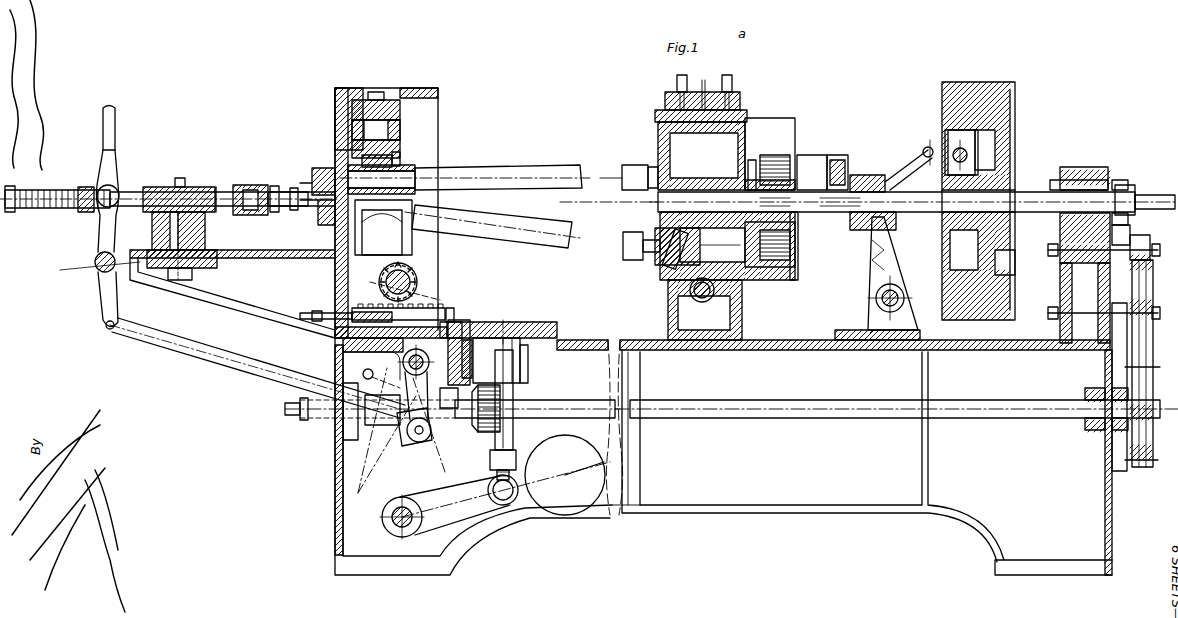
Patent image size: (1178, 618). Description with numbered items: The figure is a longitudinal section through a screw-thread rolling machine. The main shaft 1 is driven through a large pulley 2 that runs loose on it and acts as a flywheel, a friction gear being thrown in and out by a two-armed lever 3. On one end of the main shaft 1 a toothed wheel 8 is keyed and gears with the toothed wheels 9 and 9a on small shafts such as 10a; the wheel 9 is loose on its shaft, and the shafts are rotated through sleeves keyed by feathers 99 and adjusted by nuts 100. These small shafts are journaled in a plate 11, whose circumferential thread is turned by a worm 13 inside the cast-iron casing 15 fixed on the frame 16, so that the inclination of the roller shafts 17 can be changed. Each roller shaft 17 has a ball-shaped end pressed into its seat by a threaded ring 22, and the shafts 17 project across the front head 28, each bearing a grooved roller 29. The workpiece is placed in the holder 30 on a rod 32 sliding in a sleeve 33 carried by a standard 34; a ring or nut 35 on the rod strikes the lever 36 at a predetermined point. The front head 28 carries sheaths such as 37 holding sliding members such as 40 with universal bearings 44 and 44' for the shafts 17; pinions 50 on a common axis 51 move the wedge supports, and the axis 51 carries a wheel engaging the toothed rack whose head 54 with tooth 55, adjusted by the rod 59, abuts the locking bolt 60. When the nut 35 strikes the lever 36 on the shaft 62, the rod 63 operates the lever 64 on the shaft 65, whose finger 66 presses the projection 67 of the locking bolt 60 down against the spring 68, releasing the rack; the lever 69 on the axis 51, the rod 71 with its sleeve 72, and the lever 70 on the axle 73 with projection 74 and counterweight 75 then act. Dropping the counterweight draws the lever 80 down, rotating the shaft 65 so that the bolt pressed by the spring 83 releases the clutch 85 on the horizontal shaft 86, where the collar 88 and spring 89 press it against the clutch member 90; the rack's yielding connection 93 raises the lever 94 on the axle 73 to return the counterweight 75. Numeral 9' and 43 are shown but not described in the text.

The main shaft 1 is at (896, 222).
The pulley 2 is at (968, 322).
The two-armed lever 3 is at (875, 270).
The toothed wheel 8 is at (790, 228).
The toothed wheel 9 is at (770, 154).
The clutch member 9' is at (812, 172).
The toothed wheel 9a is at (790, 270).
The small shaft 10a is at (760, 250).
The plate 11 is at (690, 151).
The worm 13 is at (700, 302).
The casing 15 is at (775, 326).
The frame 16 is at (859, 457).
The roller shafts 17 is at (465, 206).
The threaded ring 22 is at (655, 262).
The front head 28 is at (428, 90).
The roller 29 is at (318, 168).
The holder 30 is at (252, 185).
The rod 32 is at (132, 190).
The sleeve 33 is at (214, 187).
The standard 34 is at (174, 186).
The ring or nut 35 is at (84, 187).
The lever 36 is at (97, 242).
The sheath 37 is at (388, 145).
The sliding member 40 is at (388, 128).
The bearing cap 43 is at (388, 106).
The universal bearing 44 is at (393, 157).
The universal bearing 44' is at (437, 147).
The pinion 50 is at (410, 274).
The axis 51 is at (388, 282).
The head 54 is at (458, 320).
The tooth 55 is at (398, 303).
The rod 59 is at (313, 312).
The locking bolt 60 is at (456, 318).
The shaft 62 is at (100, 262).
The rod 63 is at (180, 340).
The lever 64 is at (407, 394).
The shaft 65 is at (411, 361).
The finger 66 is at (461, 359).
The projection 67 is at (445, 388).
The spring 68 is at (496, 384).
The lever 69 is at (440, 298).
The lever 70 is at (380, 510).
The rod 71 is at (372, 430).
The sleeve 72 is at (435, 426).
The axle 73 is at (395, 530).
The projection 74 is at (583, 472).
The counterweight 75 is at (566, 470).
The lever 80 is at (381, 372).
The spring 83 is at (1148, 334).
The clutch 85 is at (480, 432).
The horizontal shaft 86 is at (998, 422).
The collar 88 is at (371, 414).
The spring 89 is at (428, 436).
The clutch member 90 is at (530, 420).
The yielding connection 93 is at (512, 415).
The lever 94 is at (490, 490).
The feathers 99 is at (555, 378).
The nuts 100 is at (840, 156).